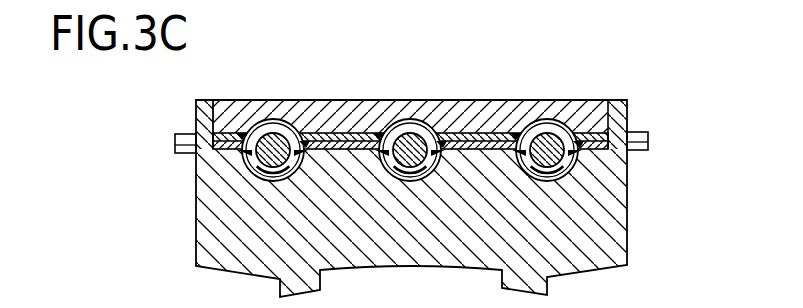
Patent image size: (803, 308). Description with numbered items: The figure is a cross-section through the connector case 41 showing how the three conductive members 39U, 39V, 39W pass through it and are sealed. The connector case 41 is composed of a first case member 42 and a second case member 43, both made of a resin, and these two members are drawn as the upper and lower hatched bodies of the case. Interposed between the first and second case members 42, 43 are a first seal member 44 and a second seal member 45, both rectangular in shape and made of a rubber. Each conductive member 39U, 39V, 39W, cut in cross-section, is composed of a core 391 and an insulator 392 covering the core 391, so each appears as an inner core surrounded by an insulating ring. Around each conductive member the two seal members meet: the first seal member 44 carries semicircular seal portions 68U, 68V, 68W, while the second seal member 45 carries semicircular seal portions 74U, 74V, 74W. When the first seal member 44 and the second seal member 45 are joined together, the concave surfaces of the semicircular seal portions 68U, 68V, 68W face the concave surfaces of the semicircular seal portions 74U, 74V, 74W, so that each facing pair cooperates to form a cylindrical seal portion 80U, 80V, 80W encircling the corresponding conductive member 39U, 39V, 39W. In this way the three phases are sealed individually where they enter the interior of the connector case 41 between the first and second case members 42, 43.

The connector case 41 is at (454, 196).
The first case member 42 is at (612, 180).
The second case member 43 is at (598, 98).
The first seal member 44 is at (220, 153).
The second seal member 45 is at (212, 103).
The cylindrical seal portion 80U is at (281, 106).
The cylindrical seal portion 80V is at (418, 106).
The cylindrical seal portion 80W is at (555, 106).
The semicircular seal portion 74U is at (263, 115).
The semicircular seal portion 74V is at (400, 115).
The semicircular seal portion 74W is at (537, 115).
The semicircular seal portion 68U is at (308, 127).
The semicircular seal portion 68V is at (445, 127).
The semicircular seal portion 68W is at (582, 127).
The conductive member 39U is at (329, 228).
The conductive member 39V is at (466, 228).
The conductive member 39W is at (603, 228).
The core 391 is at (258, 181).
The insulator 392 is at (291, 180).